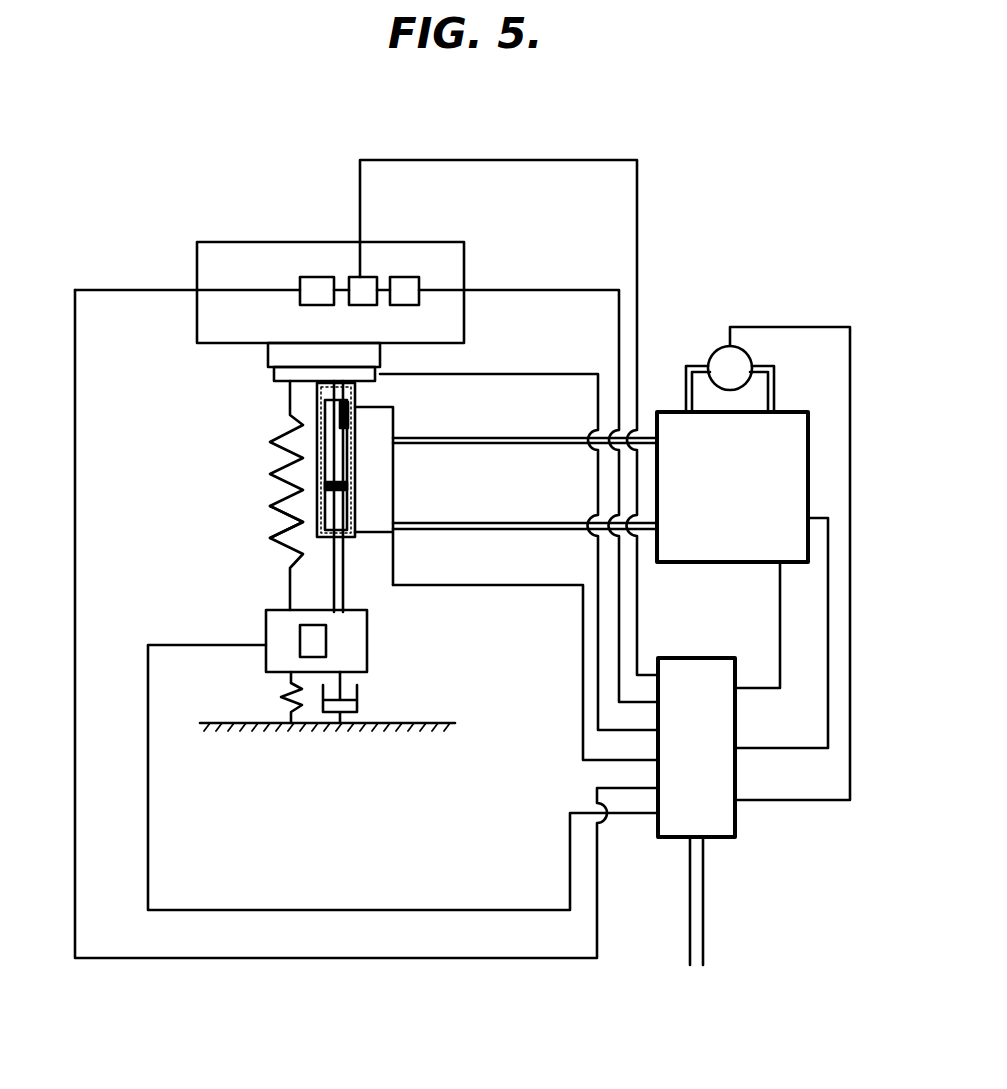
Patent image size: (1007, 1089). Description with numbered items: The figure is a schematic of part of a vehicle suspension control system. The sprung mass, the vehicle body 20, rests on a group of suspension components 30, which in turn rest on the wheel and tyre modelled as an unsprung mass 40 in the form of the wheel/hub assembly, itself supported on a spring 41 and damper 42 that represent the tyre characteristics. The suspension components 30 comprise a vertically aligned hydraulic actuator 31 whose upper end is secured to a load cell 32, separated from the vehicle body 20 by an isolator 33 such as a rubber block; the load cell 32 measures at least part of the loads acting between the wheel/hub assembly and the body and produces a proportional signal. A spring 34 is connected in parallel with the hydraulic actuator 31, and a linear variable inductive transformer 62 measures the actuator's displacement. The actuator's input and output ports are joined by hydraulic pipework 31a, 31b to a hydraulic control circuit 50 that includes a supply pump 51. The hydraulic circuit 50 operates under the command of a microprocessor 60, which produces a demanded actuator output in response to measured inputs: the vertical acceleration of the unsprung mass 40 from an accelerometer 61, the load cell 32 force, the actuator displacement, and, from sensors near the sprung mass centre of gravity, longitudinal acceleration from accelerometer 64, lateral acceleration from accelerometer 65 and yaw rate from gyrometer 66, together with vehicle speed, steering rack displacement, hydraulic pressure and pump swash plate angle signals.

The vehicle body 20 is at (383, 242).
The accelerometer 64 is at (318, 277).
The accelerometer 65 is at (352, 277).
The gyrometer 66 is at (405, 277).
The isolator 33 is at (268, 353).
The load cell 32 is at (274, 375).
The hydraulic actuator 31 is at (283, 456).
The spring 34 is at (283, 500).
The linear variable inductive transformer (LVIT) 62 is at (352, 401).
The suspension components 30 is at (378, 478).
The hydraulic pipework 31a is at (540, 438).
The hydraulic pipework 31b is at (545, 523).
The unsprung mass 40 is at (266, 658).
The accelerometer 61 is at (300, 626).
The spring 41 is at (284, 696).
The damper 42 is at (357, 701).
The hydraulic control circuit 50 is at (732, 487).
The supply pump 51 is at (717, 358).
The microprocessor 60 is at (696, 747).